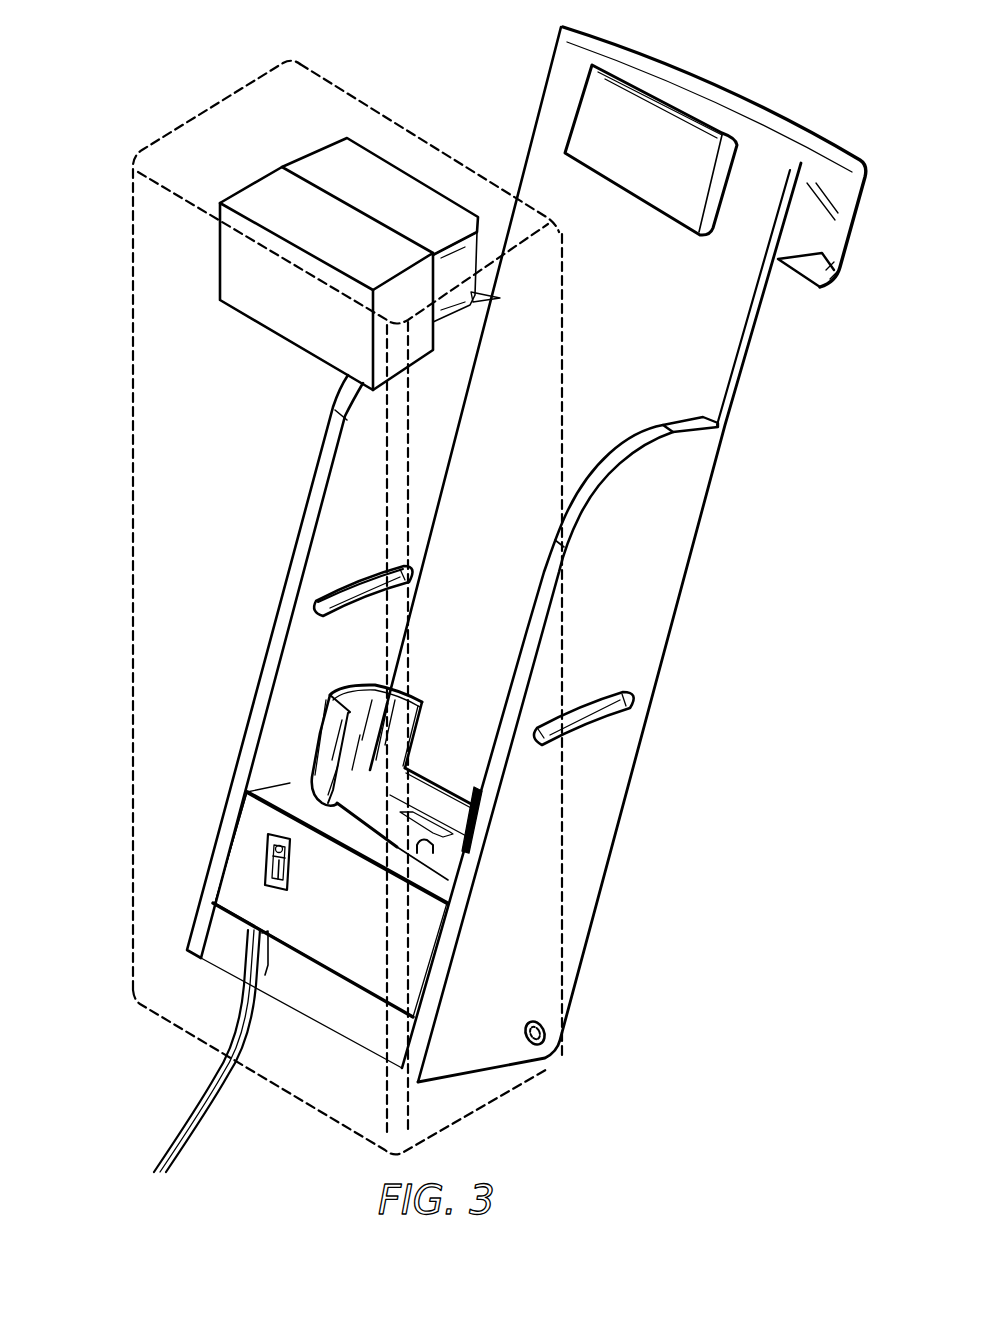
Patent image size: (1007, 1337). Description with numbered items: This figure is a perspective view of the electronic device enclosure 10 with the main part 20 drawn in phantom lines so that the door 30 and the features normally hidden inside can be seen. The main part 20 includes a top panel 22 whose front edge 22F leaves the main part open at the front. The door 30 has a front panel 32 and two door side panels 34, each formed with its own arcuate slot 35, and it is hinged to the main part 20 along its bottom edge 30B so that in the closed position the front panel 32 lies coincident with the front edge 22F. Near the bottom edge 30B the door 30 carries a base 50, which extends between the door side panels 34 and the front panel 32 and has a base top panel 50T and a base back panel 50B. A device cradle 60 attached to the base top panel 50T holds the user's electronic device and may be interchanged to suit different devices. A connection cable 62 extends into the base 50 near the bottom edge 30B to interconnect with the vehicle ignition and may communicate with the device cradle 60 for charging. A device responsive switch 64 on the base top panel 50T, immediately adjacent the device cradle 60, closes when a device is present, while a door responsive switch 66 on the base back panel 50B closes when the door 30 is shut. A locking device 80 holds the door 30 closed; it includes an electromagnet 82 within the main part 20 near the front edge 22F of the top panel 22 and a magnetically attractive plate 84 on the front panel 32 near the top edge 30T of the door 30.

The electronic device enclosure 10 is at (166, 1090).
The main part 20 is at (133, 558).
The top panel 22 is at (197, 143).
The front edge 22F is at (313, 75).
The door 30 is at (686, 577).
The top edge 30T is at (643, 67).
The bottom edge 30B is at (217, 973).
The front panel 32 is at (651, 333).
The door side panel 34 is at (442, 375).
The arcuate slot 35 is at (350, 580).
The base 50 is at (258, 812).
The base top panel 50T is at (287, 798).
The base back panel 50B is at (355, 942).
The device cradle 60 is at (333, 710).
The connection cable 62 is at (190, 1140).
The device responsive switch 64 is at (420, 842).
The door responsive switch 66 is at (283, 838).
The locking device 80 is at (575, 115).
The electromagnet 82 is at (383, 157).
The magnetically attractive plate 84 is at (733, 163).